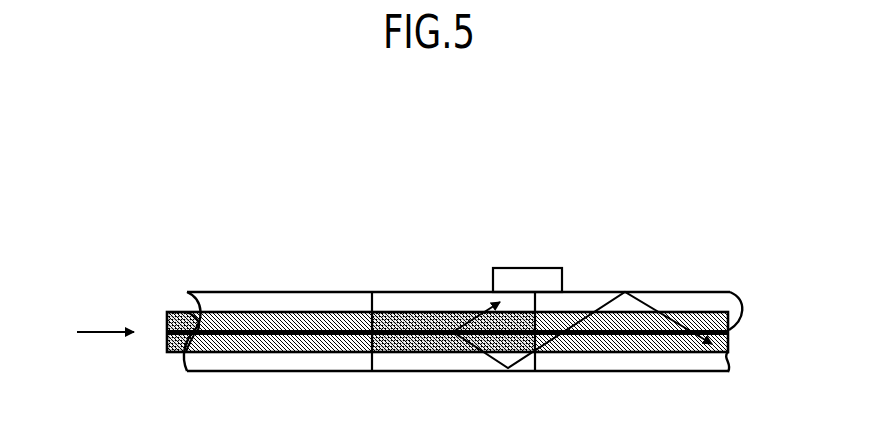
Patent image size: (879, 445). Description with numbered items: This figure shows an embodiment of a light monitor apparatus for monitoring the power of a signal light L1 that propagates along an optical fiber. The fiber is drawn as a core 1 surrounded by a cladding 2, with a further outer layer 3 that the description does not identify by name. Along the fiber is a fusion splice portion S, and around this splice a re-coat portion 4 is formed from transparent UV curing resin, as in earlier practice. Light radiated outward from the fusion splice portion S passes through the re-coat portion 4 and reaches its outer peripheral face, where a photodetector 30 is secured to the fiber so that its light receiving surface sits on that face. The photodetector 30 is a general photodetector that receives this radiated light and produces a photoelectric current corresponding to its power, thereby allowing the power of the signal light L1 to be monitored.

The core 1 is at (167, 333).
The cladding 2 is at (177, 313).
The cladding 3 is at (267, 300).
The re-coat portion 4 is at (390, 291).
The photodetector 30 is at (528, 266).
The fusion splice portion S is at (453, 330).
The signal light L1 is at (493, 357).